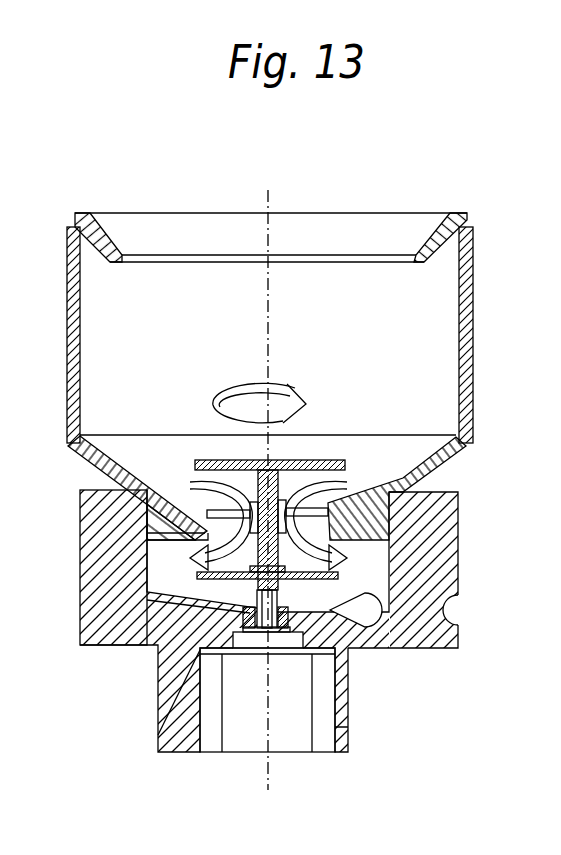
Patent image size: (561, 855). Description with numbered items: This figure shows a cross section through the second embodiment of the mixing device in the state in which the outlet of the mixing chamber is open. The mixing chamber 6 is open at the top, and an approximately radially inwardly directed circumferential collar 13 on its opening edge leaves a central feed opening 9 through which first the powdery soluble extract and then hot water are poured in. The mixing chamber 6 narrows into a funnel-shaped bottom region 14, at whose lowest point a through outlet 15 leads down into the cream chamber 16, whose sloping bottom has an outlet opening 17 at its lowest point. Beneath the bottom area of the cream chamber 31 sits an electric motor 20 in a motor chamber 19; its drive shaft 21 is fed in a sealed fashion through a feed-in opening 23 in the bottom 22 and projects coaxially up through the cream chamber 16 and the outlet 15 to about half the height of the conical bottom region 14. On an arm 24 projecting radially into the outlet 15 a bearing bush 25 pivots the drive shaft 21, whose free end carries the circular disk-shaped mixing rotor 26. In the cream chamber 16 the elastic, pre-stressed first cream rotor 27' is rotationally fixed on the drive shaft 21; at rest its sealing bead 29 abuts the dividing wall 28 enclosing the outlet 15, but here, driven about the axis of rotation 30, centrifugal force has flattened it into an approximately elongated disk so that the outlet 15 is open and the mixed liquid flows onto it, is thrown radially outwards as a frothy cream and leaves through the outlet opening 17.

The mixing chamber 6 is at (402, 320).
The feed opening 9 is at (331, 268).
The circumferential collar 13 is at (432, 250).
The funnel-shaped bottom region 14 is at (148, 446).
The outlet 15 is at (330, 512).
The cream chamber 16 is at (365, 567).
The outlet opening 17 is at (373, 610).
The motor chamber 19 is at (348, 728).
The electric motor 20 is at (291, 705).
The drive shaft 21 is at (165, 700).
The bottom 22 is at (303, 630).
The feed-in opening 23 is at (247, 655).
The arm 24 is at (150, 532).
The bearing bush 25 is at (283, 512).
The mixing rotor 26 is at (330, 468).
The first cream rotor 27' is at (125, 623).
The dividing wall 28 is at (400, 496).
The sealing bead 29 is at (343, 580).
The axis of rotation 30 is at (268, 192).
The cream chamber 31 is at (178, 632).